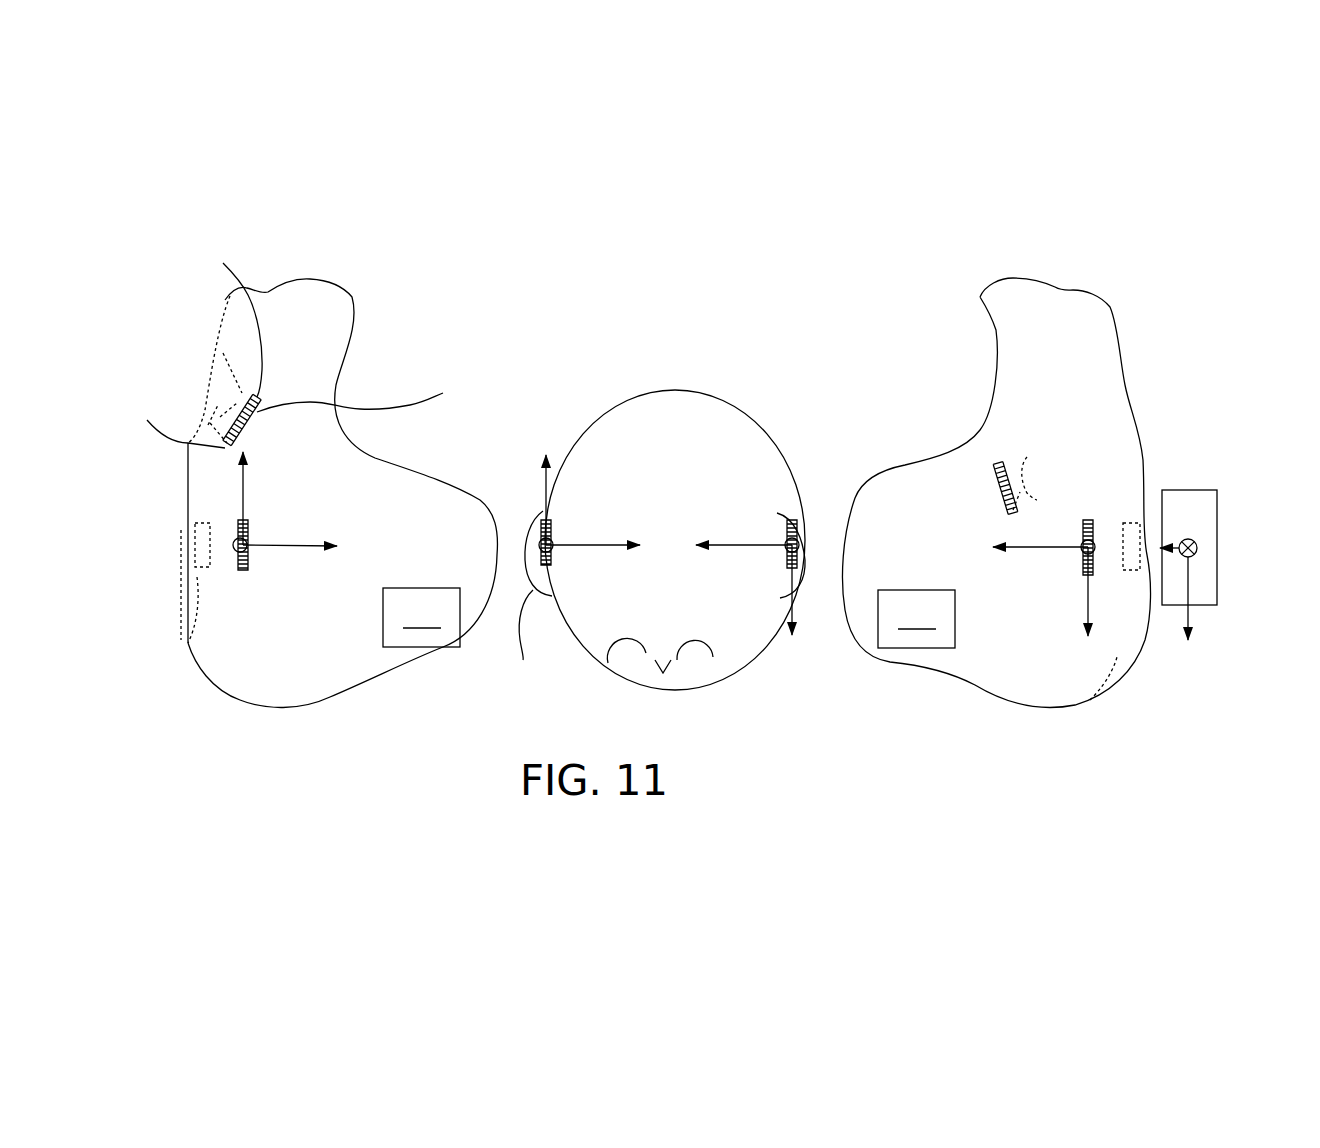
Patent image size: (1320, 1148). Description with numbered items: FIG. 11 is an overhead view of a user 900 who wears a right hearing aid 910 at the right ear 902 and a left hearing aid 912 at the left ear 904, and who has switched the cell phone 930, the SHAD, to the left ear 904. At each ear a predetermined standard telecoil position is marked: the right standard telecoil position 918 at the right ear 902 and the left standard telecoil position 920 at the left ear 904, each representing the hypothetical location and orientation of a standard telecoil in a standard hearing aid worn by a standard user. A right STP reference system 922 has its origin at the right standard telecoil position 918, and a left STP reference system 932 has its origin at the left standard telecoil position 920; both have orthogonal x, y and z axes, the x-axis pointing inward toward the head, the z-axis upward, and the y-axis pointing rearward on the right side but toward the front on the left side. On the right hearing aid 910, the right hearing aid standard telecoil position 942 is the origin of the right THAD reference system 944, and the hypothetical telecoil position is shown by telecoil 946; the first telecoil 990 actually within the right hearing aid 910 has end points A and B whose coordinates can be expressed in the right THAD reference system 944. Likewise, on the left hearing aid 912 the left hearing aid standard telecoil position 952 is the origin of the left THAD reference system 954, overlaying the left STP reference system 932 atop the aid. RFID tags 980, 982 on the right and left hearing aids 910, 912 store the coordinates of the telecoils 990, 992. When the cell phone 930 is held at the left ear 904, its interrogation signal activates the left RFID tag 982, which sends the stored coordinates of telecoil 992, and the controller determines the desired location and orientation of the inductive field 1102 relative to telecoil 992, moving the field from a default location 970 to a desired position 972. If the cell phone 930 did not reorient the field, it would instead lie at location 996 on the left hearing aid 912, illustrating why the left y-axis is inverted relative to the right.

The user 900 is at (727, 398).
The right ear 902 is at (543, 511).
The left ear 904 is at (800, 577).
The right hearing aid 910 is at (352, 297).
The left hearing aid 912 is at (985, 287).
The right standard telecoil position 918 is at (540, 638).
The left standard telecoil position 920 is at (783, 532).
The right STP reference system 922 is at (565, 529).
The cell phone 930 is at (1227, 560).
The left STP reference system 932 is at (795, 512).
The right hearing aid standard telecoil position 942 is at (253, 537).
The right THAD reference system 944 is at (256, 580).
The telecoil 946 is at (240, 572).
The left hearing aid standard telecoil position 952 is at (1100, 535).
The left THAD reference system 954 is at (1068, 580).
The default location of inductive field 970 is at (188, 643).
The desired position of inductive field 972 is at (230, 373).
The RFID tag 980 is at (421, 617).
The left RFID tag 982 is at (916, 619).
The first telecoil 990 is at (371, 391).
The telecoil 992 is at (997, 458).
The location of inductive field 996 is at (1093, 697).
The inductive field 1102 is at (1028, 470).